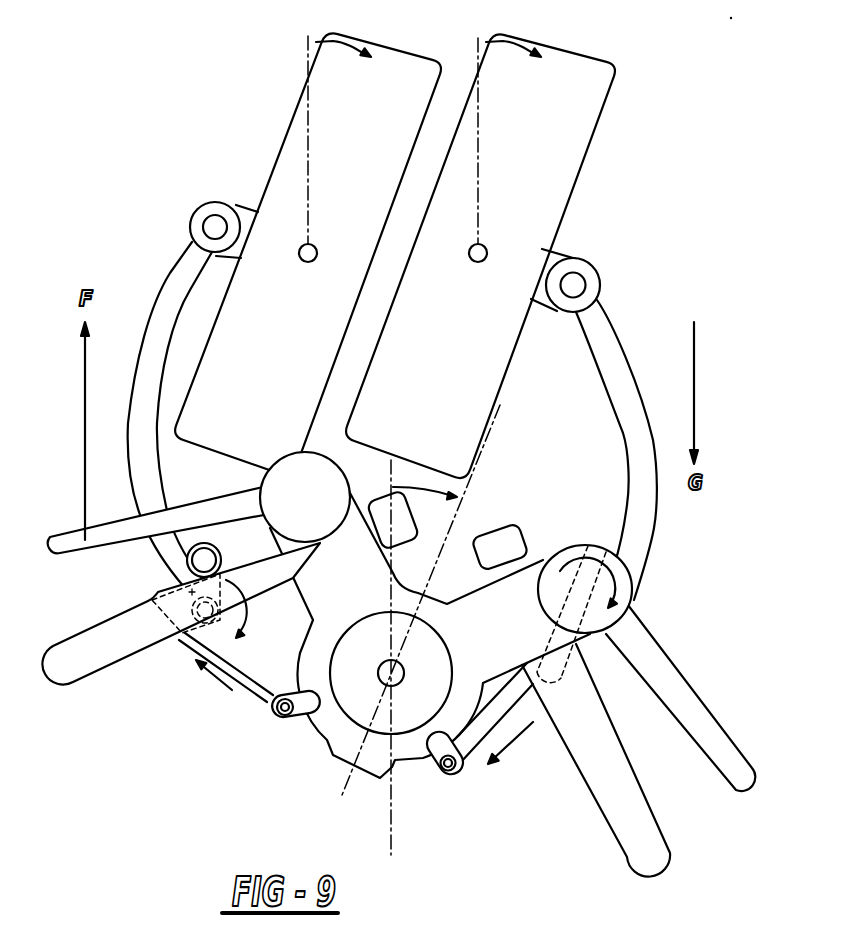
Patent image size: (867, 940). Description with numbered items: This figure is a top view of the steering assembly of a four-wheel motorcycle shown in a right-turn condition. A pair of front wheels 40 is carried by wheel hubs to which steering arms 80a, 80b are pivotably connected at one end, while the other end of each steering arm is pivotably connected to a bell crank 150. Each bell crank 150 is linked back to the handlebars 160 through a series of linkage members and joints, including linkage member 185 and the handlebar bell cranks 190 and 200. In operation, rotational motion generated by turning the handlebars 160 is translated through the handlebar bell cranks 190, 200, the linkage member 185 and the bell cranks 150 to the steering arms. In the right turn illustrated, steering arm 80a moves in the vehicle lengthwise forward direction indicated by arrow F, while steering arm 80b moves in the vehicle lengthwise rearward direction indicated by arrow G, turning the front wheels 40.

The front wheels 40 is at (290, 152).
The steering arm 80a is at (177, 294).
The steering arm 80b is at (612, 326).
The bell crank 150 is at (164, 550).
The handlebars 160 is at (632, 860).
The linkage member 185 is at (266, 701).
The handlebar bell crank 190 is at (282, 713).
The handlebar bell crank 200 is at (150, 598).